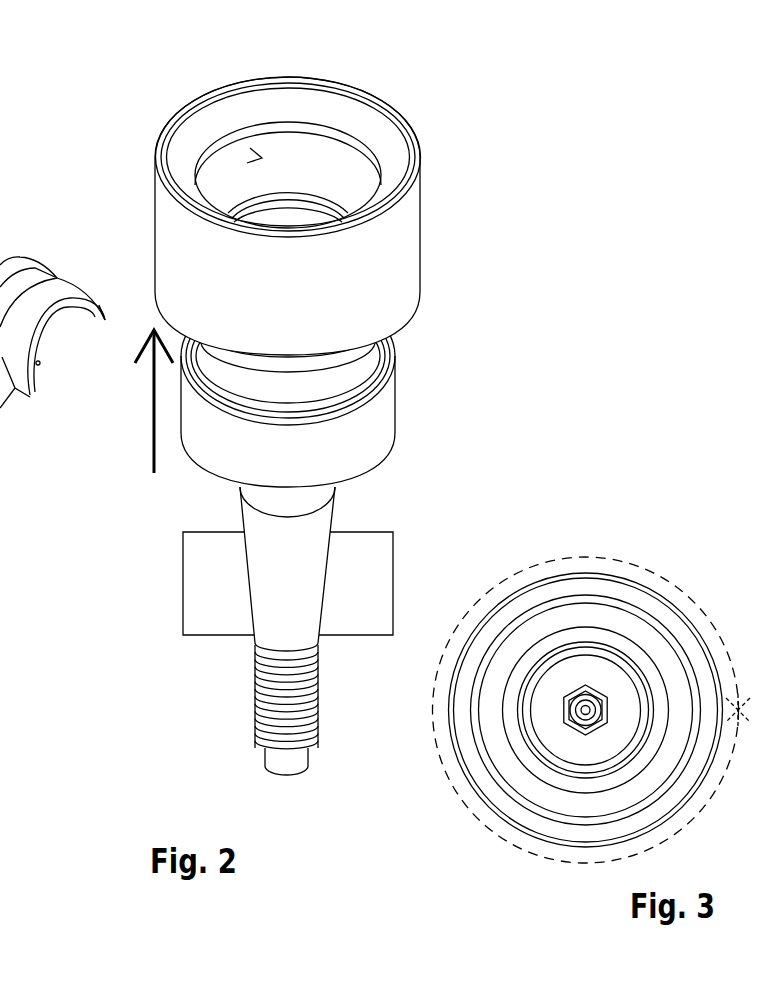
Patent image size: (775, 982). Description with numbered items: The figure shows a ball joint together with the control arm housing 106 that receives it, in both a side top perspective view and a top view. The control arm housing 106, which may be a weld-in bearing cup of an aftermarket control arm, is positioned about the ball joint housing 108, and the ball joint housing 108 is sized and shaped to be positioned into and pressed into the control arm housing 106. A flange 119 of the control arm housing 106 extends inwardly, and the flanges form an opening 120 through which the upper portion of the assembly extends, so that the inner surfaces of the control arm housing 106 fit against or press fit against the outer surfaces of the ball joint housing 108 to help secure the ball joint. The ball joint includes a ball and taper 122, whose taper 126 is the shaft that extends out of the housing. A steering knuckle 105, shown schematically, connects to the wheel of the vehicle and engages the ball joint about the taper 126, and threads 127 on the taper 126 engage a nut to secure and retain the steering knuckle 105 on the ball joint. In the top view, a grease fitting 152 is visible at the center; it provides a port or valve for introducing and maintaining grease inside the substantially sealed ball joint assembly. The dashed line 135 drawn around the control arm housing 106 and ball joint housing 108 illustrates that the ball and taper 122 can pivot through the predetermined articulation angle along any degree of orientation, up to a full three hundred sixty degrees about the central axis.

In FIG. 2, the steering knuckle 105 is at (208, 583).
In FIG. 2, the control arm housing 106 is at (397, 263).
In FIG. 3, the control arm housing 106 is at (590, 587).
In FIG. 2, the ball joint housing 108 is at (360, 432).
In FIG. 3, the ball joint housing 108 is at (555, 737).
In FIG. 2, the flange 119 is at (327, 132).
In FIG. 2, the opening 120 is at (262, 158).
In FIG. 2, the ball and taper 122 is at (290, 532).
In FIG. 2, the taper 126 is at (278, 612).
In FIG. 2, the threads 127 is at (303, 698).
In FIG. 3, the dashed line 135 is at (657, 575).
In FIG. 3, the grease fitting 152 is at (563, 707).